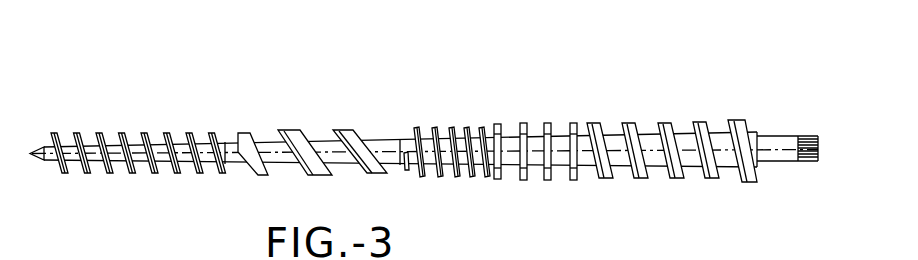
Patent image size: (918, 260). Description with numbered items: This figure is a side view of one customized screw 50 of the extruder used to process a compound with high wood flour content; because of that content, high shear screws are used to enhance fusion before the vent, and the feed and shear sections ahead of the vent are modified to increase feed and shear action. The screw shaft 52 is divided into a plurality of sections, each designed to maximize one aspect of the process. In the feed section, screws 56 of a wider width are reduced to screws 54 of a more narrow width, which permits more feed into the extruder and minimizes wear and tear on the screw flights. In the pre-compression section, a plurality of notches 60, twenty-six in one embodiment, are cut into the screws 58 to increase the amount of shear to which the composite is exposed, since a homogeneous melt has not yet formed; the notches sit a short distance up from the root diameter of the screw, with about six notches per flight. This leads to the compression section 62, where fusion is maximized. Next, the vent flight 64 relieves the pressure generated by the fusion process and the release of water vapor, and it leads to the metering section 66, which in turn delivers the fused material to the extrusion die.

The customized screw 50 is at (453, 132).
The screw shaft 52 is at (818, 148).
The narrow-width screws 54 is at (683, 180).
The screws of width w 56 is at (613, 180).
The pre-compression screws 58 is at (523, 180).
The notches 60 is at (573, 124).
The compression section 62 is at (458, 118).
The vent flight 64 is at (312, 127).
The metering section 66 is at (145, 127).